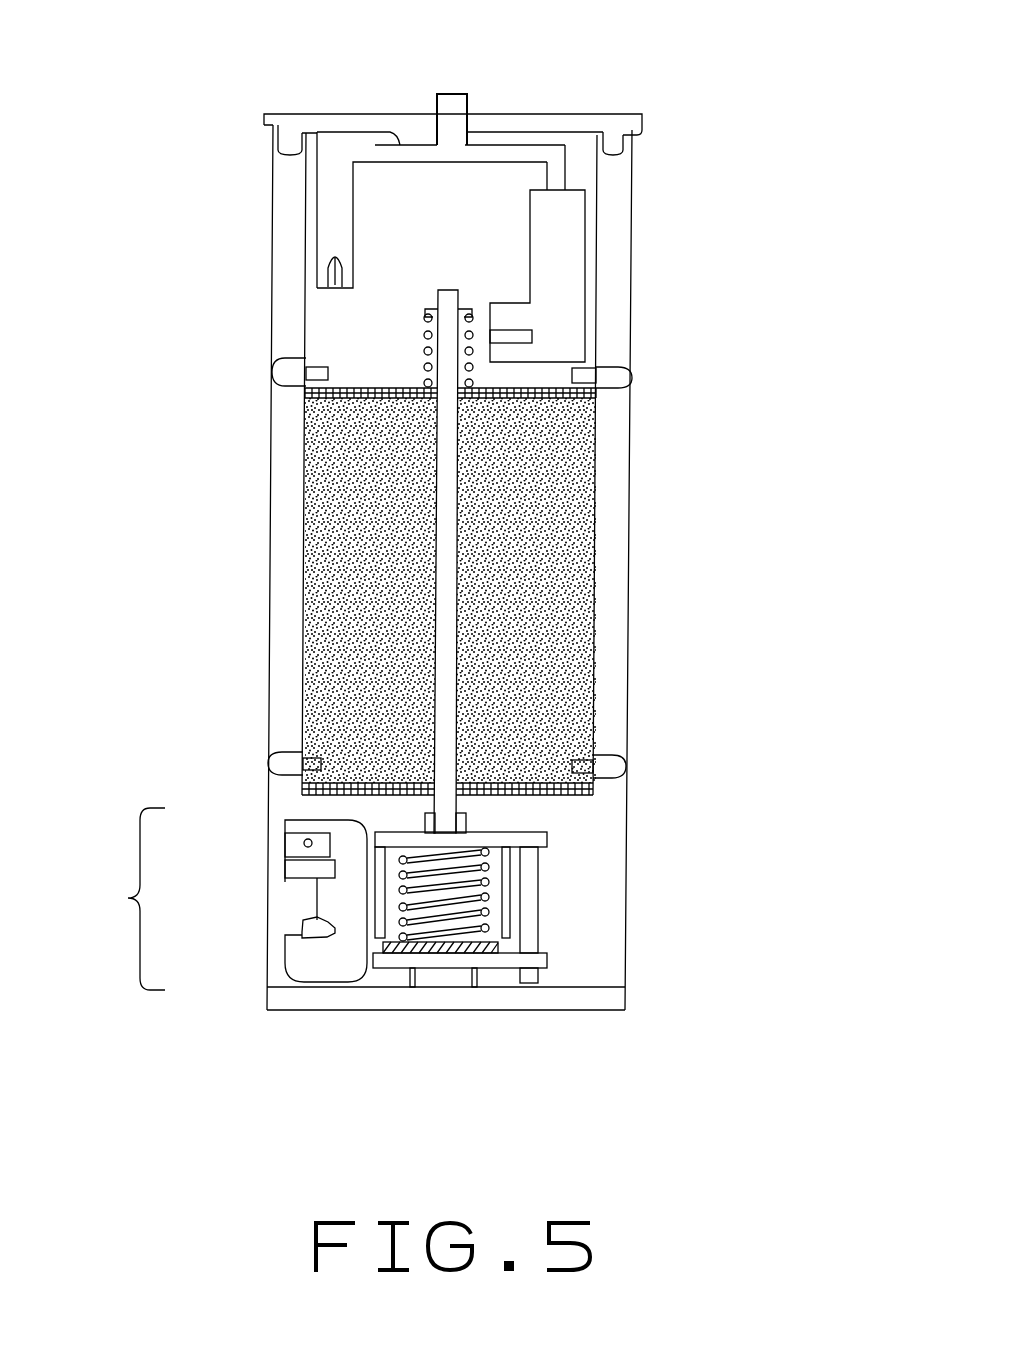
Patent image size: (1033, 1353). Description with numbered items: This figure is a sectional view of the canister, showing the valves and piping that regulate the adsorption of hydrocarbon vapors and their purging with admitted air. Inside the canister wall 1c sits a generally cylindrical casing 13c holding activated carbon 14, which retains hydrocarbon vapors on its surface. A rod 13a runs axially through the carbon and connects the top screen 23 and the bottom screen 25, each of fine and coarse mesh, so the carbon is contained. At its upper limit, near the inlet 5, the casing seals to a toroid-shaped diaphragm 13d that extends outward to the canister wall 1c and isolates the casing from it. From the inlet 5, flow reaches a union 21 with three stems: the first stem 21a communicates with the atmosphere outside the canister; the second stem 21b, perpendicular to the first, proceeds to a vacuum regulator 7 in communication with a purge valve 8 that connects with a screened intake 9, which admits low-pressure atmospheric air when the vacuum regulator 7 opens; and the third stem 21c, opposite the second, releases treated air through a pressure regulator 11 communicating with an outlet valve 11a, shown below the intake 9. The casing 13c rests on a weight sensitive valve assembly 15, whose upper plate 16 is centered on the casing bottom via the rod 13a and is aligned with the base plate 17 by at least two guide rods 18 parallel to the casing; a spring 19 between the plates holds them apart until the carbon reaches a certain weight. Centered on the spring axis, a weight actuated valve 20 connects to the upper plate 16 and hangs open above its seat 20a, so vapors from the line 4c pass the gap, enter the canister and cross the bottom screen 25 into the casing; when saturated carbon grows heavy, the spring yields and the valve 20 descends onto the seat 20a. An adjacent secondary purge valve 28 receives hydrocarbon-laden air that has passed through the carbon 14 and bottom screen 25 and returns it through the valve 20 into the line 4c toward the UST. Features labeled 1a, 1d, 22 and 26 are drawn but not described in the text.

The case bottom 1a is at (587, 990).
The wall 1c is at (631, 640).
The bottom plate 1d is at (360, 1000).
The line 4c is at (449, 990).
The inlet 5 is at (471, 93).
The vacuum regulator 7 is at (325, 160).
The purge valve 8 is at (325, 240).
The screened intake 9 is at (332, 283).
The pressure regulator 11 is at (553, 262).
The outlet valve 11a is at (550, 323).
The rod 13a is at (543, 390).
The casing 13c is at (598, 437).
The diaphragm 13d is at (285, 138).
The carbon 14 is at (535, 512).
The weight sensitive valve assembly 15 is at (127, 899).
The upper plate 16 is at (540, 840).
The base plate 17 is at (550, 960).
The guide rods 18 is at (533, 893).
The spring 19 is at (487, 940).
The weight actuated valve 20 is at (466, 817).
The seat 20a is at (483, 947).
The union 21 is at (483, 133).
The first stem 21a is at (444, 124).
The second stem 21b is at (395, 143).
The third stem 21c is at (557, 180).
The retaining beads 22 is at (285, 372).
The top screen 23 is at (505, 392).
The bottom screen 25 is at (490, 783).
The support post 26 is at (512, 880).
The secondary purge valve 28 is at (332, 960).